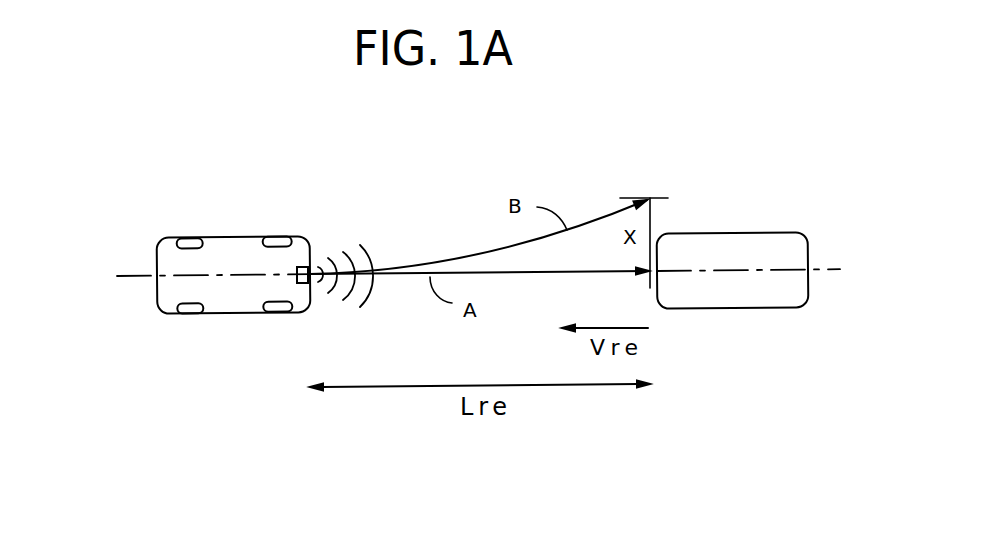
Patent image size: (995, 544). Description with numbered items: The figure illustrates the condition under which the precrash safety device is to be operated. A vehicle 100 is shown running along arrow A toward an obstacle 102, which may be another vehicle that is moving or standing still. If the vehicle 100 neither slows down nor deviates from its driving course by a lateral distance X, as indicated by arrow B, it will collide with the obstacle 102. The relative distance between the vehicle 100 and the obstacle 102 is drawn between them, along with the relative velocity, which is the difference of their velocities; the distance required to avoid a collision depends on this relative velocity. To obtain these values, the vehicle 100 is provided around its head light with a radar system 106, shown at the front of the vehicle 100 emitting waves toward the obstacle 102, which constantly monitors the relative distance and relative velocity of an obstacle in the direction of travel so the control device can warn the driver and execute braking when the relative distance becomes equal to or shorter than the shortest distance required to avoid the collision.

The vehicle 100 is at (235, 236).
The radar system 106 is at (307, 241).
The obstacle 102 is at (737, 233).